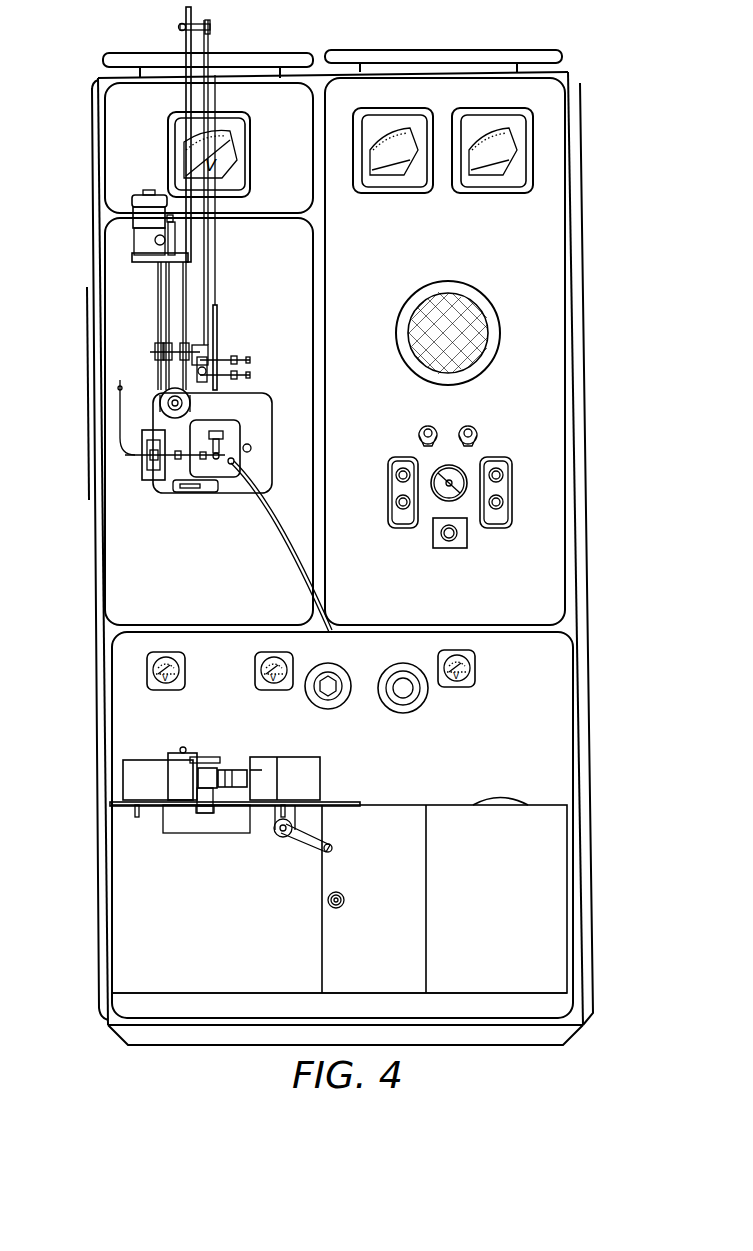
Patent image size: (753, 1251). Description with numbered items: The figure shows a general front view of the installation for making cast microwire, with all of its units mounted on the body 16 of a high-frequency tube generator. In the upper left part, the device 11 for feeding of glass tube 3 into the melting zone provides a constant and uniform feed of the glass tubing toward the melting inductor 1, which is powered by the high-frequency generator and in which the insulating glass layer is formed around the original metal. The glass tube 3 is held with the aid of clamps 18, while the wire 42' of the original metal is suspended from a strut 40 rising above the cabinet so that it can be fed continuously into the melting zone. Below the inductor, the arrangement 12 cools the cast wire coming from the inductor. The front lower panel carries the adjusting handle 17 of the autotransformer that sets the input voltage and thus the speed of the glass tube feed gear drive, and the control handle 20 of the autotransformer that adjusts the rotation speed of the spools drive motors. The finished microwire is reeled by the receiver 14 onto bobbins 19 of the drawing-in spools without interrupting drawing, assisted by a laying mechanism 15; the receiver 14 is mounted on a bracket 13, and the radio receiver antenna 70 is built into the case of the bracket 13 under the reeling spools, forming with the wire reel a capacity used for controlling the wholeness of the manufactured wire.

The melting inductor 1 is at (223, 440).
The glass tube 3 is at (217, 327).
The device for feeding of glass tube 11 is at (173, 312).
The arrangement for cooling of cast wire 12 is at (232, 458).
The bracket 13 is at (127, 872).
The receiver 14 is at (180, 772).
The laying mechanism 15 is at (197, 763).
The body of high-frequency tube generator 16 is at (562, 449).
The adjusting handle 17 is at (402, 707).
The clamps 18 is at (246, 375).
The bobbins 19 is at (233, 775).
The control handle 20 is at (337, 710).
The strut 40 is at (197, 47).
The wire of the original metal 42' is at (249, 190).
The radio receiver antenna 70 is at (207, 814).